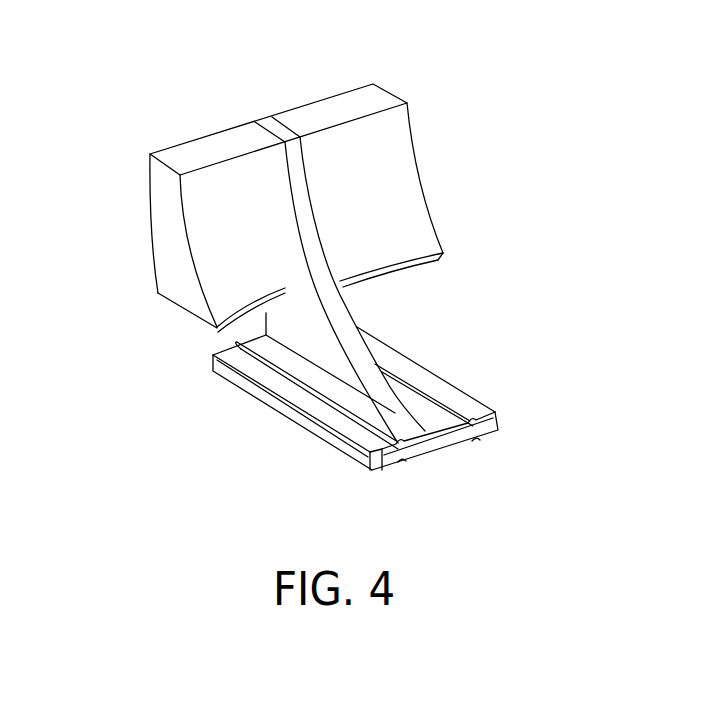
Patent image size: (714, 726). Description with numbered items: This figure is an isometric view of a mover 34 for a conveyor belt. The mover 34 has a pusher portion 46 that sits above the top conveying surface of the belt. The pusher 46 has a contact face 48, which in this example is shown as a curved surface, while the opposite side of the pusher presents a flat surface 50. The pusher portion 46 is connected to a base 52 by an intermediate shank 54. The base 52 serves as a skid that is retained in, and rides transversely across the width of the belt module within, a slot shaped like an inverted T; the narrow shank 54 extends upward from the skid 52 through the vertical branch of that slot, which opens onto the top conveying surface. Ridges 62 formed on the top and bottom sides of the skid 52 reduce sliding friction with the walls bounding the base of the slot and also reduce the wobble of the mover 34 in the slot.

The retainer assembly 34 is at (500, 82).
The pusher portion 46 is at (158, 243).
The contact face 48 is at (407, 185).
The flat surface 50 is at (150, 196).
The base 52 is at (487, 408).
The intermediate shank 54 is at (343, 313).
The ridges 62 is at (435, 395).